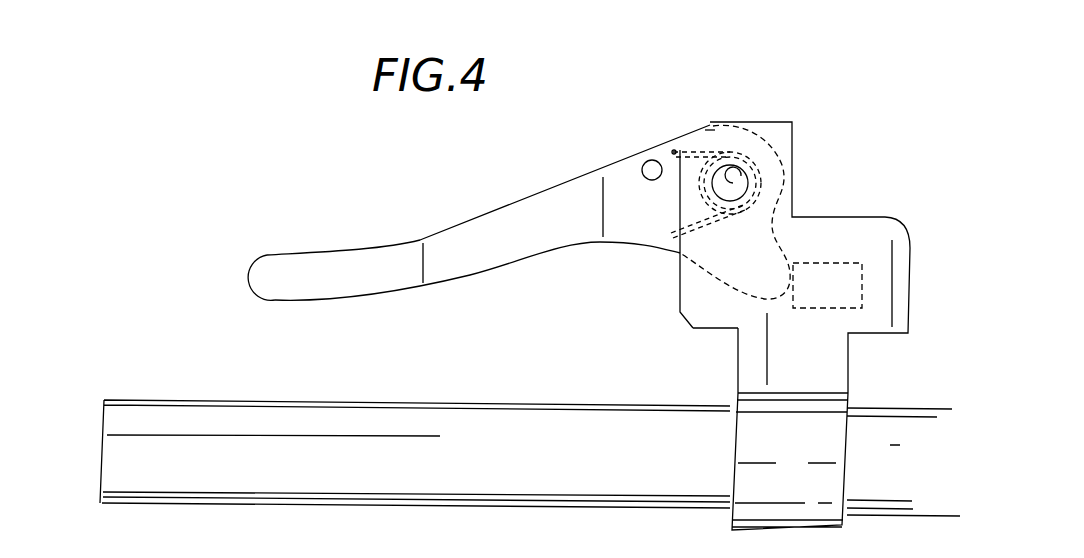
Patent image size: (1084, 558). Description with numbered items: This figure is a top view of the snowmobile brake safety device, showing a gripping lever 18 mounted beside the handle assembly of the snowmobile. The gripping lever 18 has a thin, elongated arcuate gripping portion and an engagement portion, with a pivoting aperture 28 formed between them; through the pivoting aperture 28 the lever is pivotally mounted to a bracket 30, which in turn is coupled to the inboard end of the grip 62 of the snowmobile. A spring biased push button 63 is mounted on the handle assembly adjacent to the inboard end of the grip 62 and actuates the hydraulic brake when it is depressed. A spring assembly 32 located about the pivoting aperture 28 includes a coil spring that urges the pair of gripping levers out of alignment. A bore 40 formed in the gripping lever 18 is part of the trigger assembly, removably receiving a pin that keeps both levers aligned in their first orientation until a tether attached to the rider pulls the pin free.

The gripping lever 18 is at (530, 212).
The pivoting aperture 28 is at (743, 182).
The bracket 30 is at (820, 370).
The spring assembly 32 is at (712, 150).
The bore 40 is at (645, 162).
The grip 62 is at (183, 425).
The spring biased push button 63 is at (822, 273).